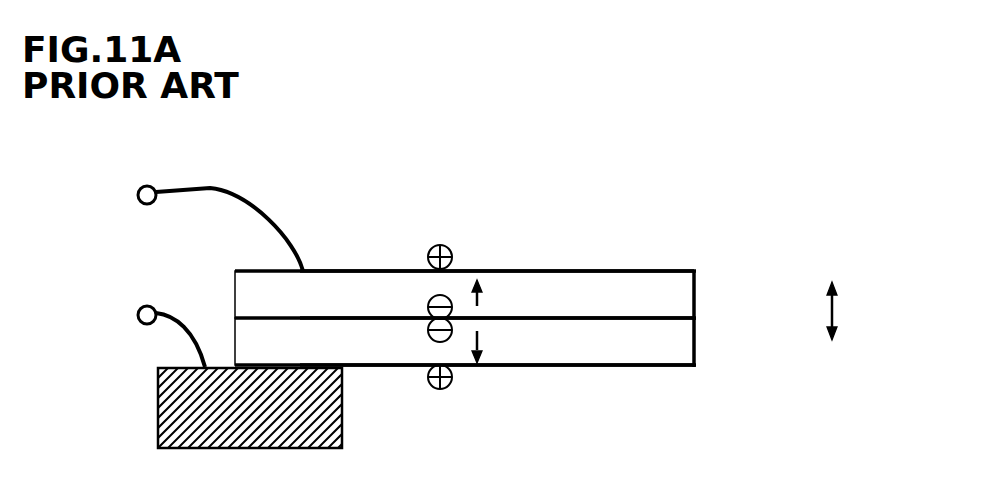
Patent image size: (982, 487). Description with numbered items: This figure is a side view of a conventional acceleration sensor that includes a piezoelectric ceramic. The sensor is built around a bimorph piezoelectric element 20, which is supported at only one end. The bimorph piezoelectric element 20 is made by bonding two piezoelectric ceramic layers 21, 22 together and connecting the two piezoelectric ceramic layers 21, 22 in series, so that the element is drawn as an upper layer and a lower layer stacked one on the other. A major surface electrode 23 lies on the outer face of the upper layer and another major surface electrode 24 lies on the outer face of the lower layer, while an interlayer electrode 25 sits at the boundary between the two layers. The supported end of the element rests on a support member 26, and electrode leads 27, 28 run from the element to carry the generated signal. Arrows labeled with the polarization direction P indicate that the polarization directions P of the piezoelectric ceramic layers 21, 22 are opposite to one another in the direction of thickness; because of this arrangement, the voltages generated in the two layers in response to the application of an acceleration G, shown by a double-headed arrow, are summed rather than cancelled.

The bimorph piezoelectric element 20 is at (497, 284).
The piezoelectric ceramic layer 21 is at (680, 292).
The piezoelectric ceramic layer 22 is at (683, 345).
The major surface electrode 23 is at (563, 268).
The major surface electrode 24 is at (565, 368).
The interlayer electrode 25 is at (621, 320).
The support member 26 is at (158, 421).
The electrode lead 27 is at (214, 177).
The electrode lead 28 is at (180, 300).
The polarization direction P is at (480, 302).
The acceleration G is at (816, 311).